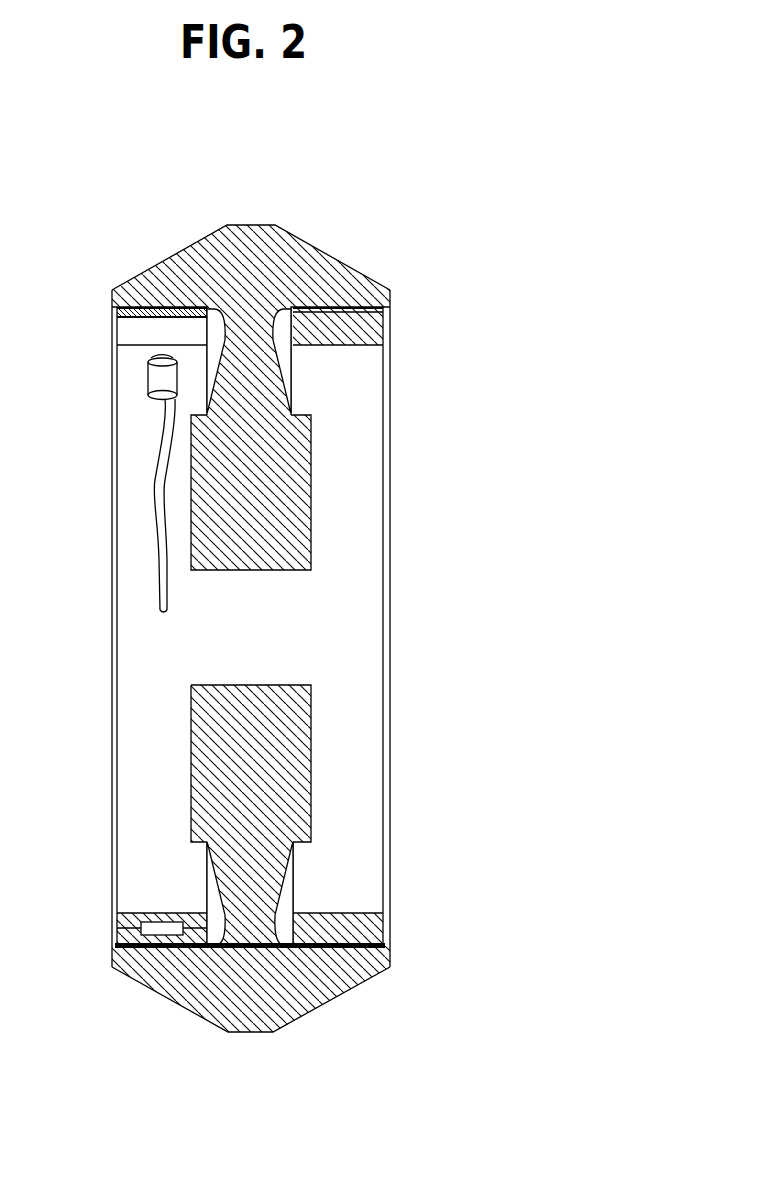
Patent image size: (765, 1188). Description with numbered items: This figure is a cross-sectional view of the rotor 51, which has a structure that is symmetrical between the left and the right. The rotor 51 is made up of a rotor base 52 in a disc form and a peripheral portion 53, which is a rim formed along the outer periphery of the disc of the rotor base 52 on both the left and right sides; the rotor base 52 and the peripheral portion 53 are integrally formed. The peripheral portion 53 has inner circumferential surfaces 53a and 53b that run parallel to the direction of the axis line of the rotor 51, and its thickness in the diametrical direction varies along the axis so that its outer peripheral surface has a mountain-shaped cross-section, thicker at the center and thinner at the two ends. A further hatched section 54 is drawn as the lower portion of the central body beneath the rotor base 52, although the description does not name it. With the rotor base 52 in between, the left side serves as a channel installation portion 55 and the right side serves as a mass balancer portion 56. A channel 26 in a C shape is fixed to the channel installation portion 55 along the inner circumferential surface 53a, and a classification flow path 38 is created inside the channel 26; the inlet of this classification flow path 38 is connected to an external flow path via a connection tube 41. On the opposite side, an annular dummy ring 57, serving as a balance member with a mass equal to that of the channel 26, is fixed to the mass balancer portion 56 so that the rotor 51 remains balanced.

The rotor 51 is at (495, 204).
The peripheral portion 53 is at (312, 273).
The inner circumferential surface 53a is at (163, 308).
The inner circumferential surface 53b is at (340, 310).
The rotor base 52 is at (290, 528).
The central body lower portion 54 is at (280, 684).
The channel installation portion 55 is at (147, 845).
The mass balancer portion 56 is at (363, 828).
The channel 26 is at (128, 937).
The dummy ring 57 is at (360, 932).
The classification flow path 38 is at (162, 377).
The connection tube 41 is at (167, 425).